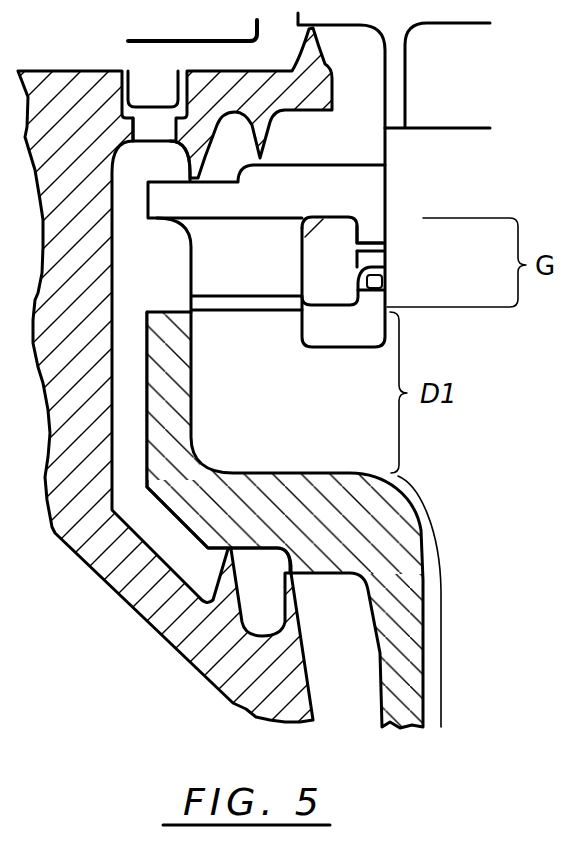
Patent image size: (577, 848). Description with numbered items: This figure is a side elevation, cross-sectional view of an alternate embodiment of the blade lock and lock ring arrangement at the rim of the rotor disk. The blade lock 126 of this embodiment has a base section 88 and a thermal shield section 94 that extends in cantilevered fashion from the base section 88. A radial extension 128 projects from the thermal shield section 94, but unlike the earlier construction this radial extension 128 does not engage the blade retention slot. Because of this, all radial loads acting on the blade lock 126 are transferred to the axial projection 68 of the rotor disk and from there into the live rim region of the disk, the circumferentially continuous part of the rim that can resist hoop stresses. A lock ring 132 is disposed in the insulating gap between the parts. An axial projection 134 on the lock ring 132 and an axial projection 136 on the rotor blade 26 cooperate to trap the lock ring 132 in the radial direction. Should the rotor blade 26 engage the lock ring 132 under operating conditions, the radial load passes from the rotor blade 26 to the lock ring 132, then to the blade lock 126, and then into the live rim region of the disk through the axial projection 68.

The rotor blade 26 is at (500, 161).
The axial projection 68 is at (283, 397).
The base section 88 is at (267, 266).
The thermal shield section 94 is at (318, 200).
The blade lock 126 is at (330, 158).
The radial extension 128 is at (368, 229).
The lock ring 132 is at (344, 280).
The axial projection 134 is at (384, 262).
The axial projection 136 is at (386, 288).